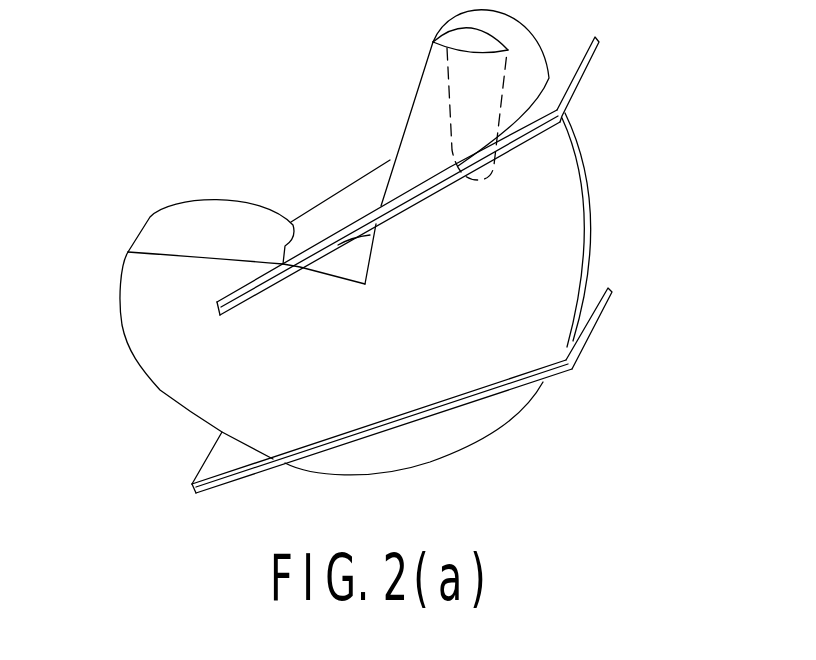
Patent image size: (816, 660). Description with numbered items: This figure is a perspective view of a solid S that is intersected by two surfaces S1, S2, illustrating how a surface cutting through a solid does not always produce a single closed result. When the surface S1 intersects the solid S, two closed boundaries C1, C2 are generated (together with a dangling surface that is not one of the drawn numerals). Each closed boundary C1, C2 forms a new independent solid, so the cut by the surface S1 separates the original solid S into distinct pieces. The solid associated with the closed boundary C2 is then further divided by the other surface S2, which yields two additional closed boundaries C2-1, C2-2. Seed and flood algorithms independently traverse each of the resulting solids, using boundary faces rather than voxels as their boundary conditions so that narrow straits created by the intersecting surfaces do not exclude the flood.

The closed boundary C1 is at (438, 36).
The closed boundary C2 is at (594, 129).
The closed boundary C2-1 is at (591, 183).
The closed boundary C2-2 is at (513, 422).
The solid S is at (125, 332).
The surface S1 is at (305, 198).
The surface S2 is at (208, 458).